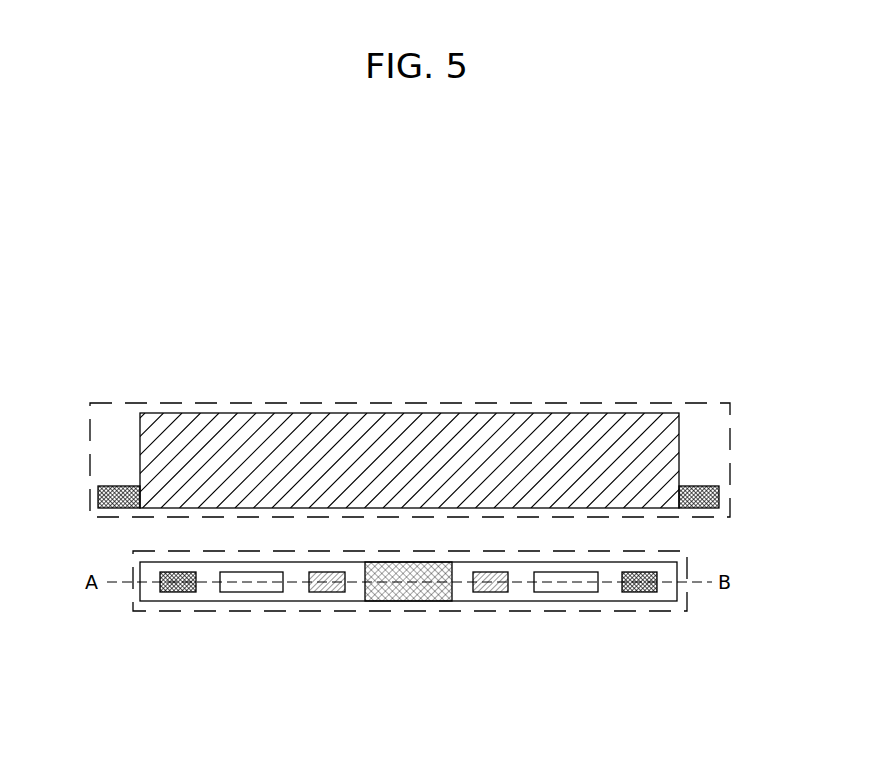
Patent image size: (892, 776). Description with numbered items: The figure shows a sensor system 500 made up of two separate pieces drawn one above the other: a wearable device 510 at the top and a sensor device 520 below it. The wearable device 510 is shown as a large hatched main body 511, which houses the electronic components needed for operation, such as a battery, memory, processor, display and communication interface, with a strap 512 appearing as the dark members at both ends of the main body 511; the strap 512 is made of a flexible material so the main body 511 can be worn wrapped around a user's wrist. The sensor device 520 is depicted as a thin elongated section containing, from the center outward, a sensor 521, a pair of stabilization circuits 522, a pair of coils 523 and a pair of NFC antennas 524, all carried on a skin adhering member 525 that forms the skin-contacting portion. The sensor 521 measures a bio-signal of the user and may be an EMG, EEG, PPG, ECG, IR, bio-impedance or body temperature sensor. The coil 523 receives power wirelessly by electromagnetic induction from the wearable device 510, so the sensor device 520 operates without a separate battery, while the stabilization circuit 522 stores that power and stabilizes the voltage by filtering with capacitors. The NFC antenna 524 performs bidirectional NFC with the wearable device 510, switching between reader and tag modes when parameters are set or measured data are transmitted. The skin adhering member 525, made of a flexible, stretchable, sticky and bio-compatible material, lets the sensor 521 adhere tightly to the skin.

The sensor system 500 is at (503, 323).
The wearable device 510 is at (461, 403).
The main body 511 is at (679, 450).
The strap 512 is at (719, 495).
The sensor device 520 is at (454, 551).
The sensor 521 is at (408, 601).
The stabilization circuit 522 is at (327, 592).
The coil 523 is at (251, 592).
The NFC antenna 524 is at (178, 592).
The skin adhering member 525 is at (291, 562).